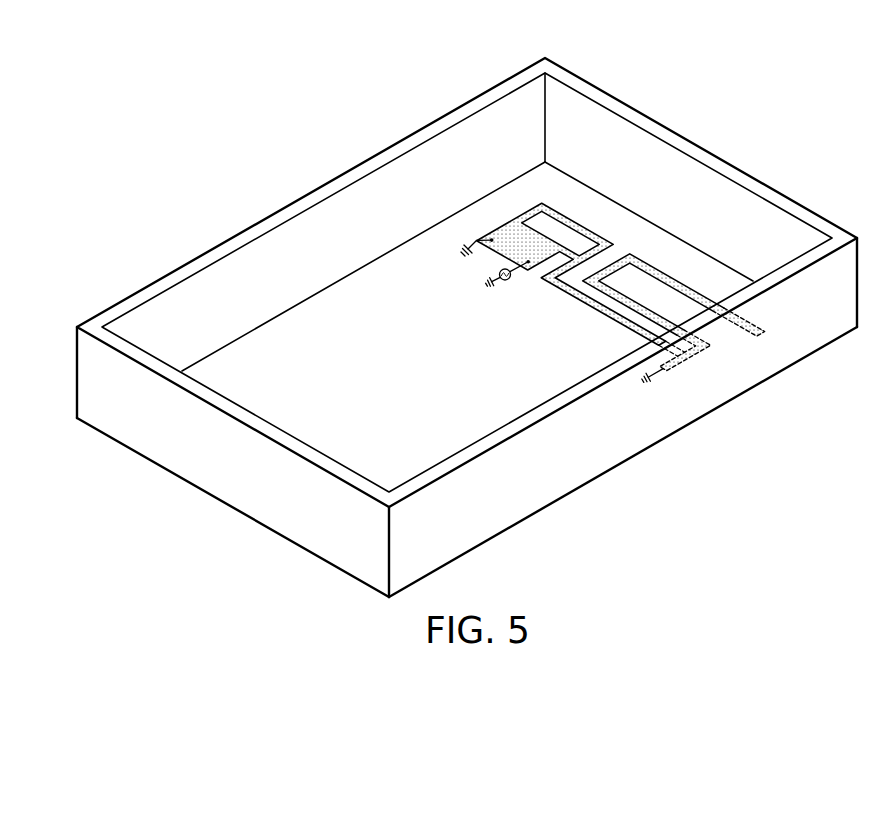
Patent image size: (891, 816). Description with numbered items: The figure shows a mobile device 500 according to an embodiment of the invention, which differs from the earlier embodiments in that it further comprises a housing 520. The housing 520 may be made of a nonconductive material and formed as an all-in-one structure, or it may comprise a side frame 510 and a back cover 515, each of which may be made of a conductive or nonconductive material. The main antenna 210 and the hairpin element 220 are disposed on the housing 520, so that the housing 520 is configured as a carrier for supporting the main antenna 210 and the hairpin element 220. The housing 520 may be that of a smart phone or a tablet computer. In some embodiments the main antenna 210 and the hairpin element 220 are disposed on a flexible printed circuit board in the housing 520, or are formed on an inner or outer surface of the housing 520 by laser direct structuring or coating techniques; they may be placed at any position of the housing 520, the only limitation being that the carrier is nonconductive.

The mobile device 500 is at (168, 132).
The main antenna 210 is at (578, 232).
The hairpin element 220 is at (687, 290).
The side frame 510 is at (722, 373).
The back cover 515 is at (545, 363).
The housing 520 is at (847, 431).